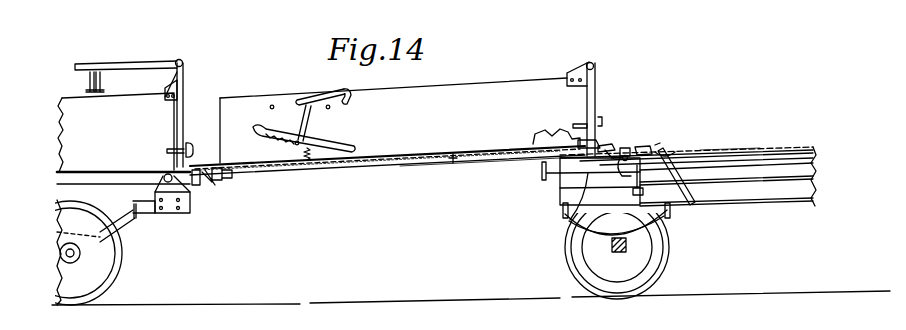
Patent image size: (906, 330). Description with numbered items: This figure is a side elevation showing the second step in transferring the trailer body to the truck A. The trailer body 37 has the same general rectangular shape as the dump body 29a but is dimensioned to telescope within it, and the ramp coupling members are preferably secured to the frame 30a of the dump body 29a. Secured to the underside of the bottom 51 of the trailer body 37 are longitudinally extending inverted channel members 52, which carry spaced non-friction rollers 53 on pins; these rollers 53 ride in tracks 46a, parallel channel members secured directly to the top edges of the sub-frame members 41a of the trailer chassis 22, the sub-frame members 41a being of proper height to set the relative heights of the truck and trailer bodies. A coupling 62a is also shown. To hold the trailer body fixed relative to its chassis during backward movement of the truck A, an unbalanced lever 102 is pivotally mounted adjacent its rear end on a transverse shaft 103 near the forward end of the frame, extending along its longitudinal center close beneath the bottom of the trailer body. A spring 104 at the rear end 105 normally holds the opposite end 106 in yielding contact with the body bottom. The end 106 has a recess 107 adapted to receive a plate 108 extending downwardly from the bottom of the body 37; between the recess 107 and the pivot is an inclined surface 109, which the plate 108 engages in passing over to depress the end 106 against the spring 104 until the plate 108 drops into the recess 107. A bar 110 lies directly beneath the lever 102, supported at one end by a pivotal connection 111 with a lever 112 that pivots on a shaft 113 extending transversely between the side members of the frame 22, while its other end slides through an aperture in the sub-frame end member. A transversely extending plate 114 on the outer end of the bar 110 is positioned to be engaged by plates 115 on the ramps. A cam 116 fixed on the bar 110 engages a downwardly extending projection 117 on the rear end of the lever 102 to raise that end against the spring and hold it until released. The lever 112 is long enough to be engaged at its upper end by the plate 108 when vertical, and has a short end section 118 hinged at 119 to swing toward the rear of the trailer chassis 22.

The truck A is at (124, 58).
The trailer chassis 22 is at (781, 196).
The dump body 29a is at (116, 132).
The frame 30a is at (156, 149).
The trailer body 37 is at (523, 58).
The sub-frame members 41a is at (758, 170).
The tracks 46a is at (798, 150).
The bottom 51 is at (543, 132).
The channel members 52 is at (392, 160).
The rollers 53 is at (455, 158).
The coupling 62a is at (201, 187).
The unbalanced lever 102 is at (624, 151).
The shaft 103 is at (626, 154).
The spring 104 is at (657, 228).
The rear end 105 is at (642, 150).
The opposite end 106 is at (563, 178).
The recess 107 is at (601, 146).
The plate 108 is at (578, 140).
The inclined surface 109 is at (604, 147).
The bar 110 is at (573, 220).
The pivotal connection 111 is at (690, 173).
The lever 112 is at (720, 197).
The shaft 113 is at (692, 206).
The transversely extending plate 114 is at (542, 173).
The plates 115 is at (223, 182).
The cam 116 is at (626, 170).
The projection 117 is at (670, 153).
The short end section 118 is at (681, 155).
The hinge 119 is at (714, 144).